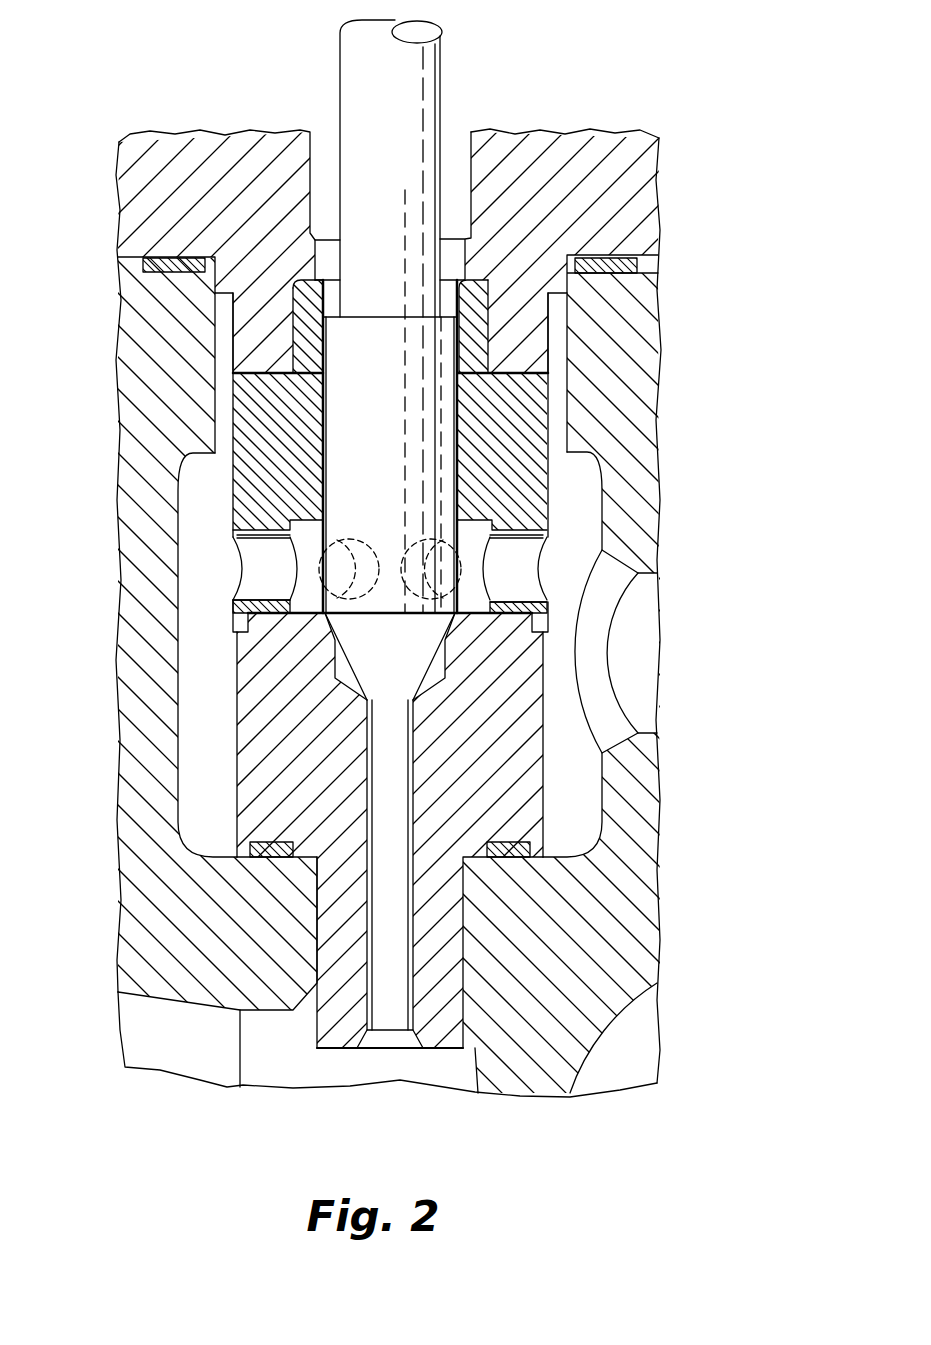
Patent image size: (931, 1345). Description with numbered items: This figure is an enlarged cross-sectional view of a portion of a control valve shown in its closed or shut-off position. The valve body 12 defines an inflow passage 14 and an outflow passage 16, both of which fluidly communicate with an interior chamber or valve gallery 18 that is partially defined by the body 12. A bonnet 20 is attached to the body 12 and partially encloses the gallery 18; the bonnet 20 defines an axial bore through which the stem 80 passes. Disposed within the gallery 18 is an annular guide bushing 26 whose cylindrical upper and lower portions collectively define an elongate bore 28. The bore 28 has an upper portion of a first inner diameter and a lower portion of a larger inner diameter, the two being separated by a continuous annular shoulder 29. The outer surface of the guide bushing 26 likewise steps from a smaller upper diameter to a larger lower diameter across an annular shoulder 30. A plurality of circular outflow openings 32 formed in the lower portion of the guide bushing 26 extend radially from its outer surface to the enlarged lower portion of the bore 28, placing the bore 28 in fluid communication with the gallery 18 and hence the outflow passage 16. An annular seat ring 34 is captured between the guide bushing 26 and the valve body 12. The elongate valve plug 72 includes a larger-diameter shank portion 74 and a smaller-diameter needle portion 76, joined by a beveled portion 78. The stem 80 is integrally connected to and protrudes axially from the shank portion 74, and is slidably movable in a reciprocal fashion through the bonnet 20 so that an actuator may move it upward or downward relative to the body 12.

The valve body 12 is at (465, 619).
The inflow passage 14 is at (157, 1042).
The outflow passage 16 is at (630, 630).
The valve gallery 18 is at (203, 678).
The bonnet 20 is at (618, 192).
The guide bushing 26 is at (560, 355).
The bore 28 is at (342, 455).
The annular shoulder 29 is at (486, 550).
The annular shoulder 30 is at (266, 368).
The outflow openings 32 is at (257, 560).
The seat ring 34 is at (465, 830).
The valve plug 72 is at (420, 765).
The shank portion 74 is at (425, 446).
The needle portion 76 is at (403, 953).
The beveled portion 78 is at (433, 660).
The stem 80 is at (442, 52).